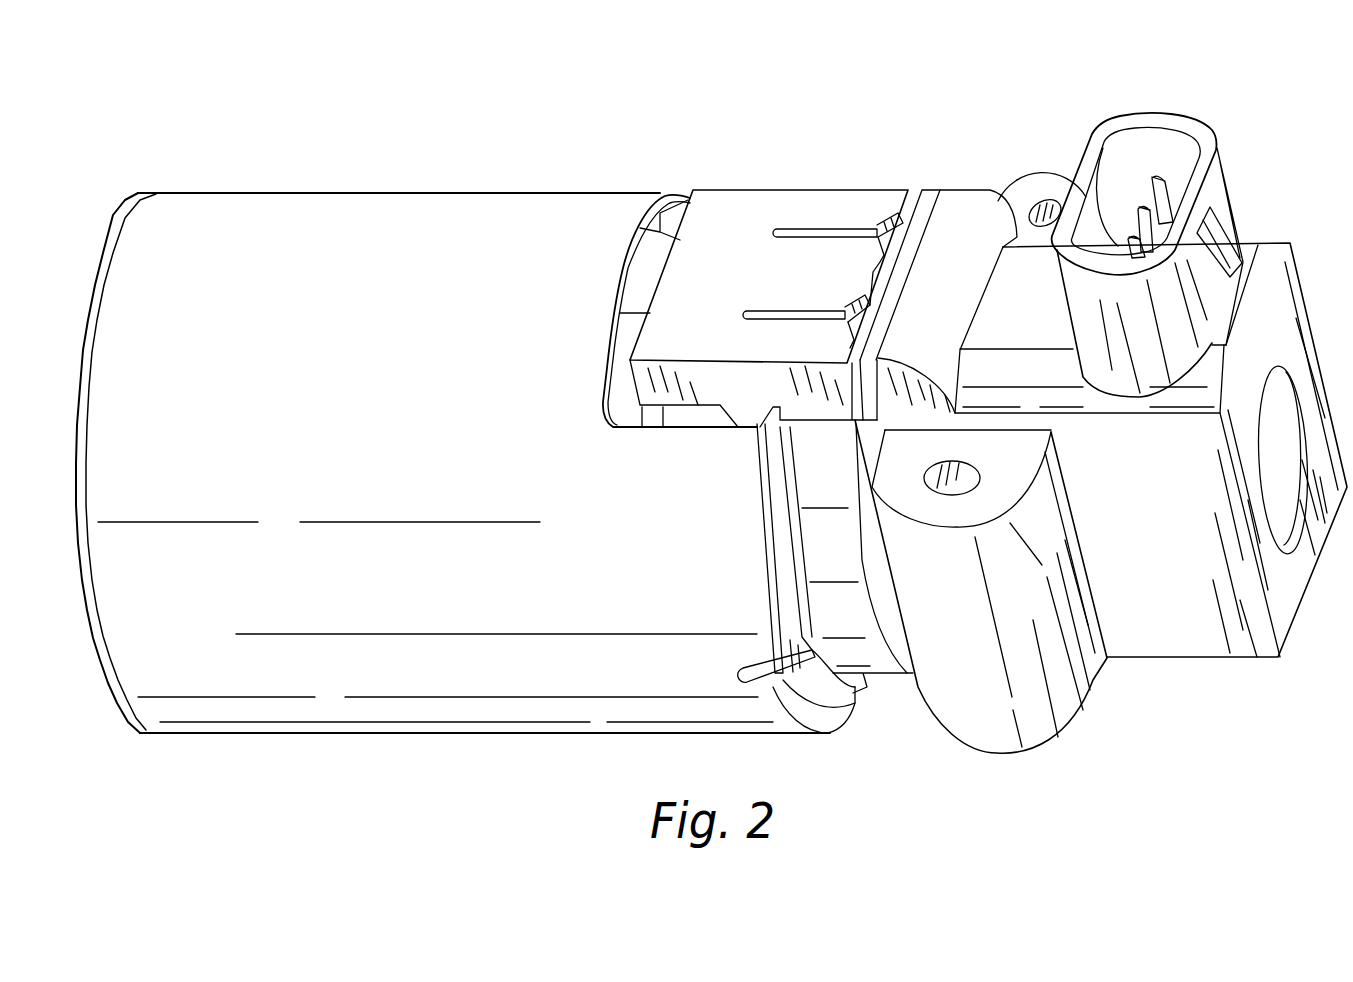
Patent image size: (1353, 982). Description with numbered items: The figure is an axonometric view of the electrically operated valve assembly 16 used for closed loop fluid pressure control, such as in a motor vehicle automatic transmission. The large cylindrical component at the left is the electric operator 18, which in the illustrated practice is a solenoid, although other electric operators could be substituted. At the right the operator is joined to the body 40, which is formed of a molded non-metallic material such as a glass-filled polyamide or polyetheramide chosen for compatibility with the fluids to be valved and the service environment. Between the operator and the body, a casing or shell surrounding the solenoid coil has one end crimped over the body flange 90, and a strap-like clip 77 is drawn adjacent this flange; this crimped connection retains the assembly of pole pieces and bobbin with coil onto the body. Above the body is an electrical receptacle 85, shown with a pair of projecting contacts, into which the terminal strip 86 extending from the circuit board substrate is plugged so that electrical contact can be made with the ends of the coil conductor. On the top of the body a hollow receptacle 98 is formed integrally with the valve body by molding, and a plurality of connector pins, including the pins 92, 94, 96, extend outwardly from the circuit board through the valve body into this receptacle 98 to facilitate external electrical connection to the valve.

The valve assembly 16 is at (1004, 786).
The electric operator 18 is at (427, 160).
The body 40 is at (1195, 660).
The retaining strap 77 is at (860, 697).
The electrical receptacle 85 is at (783, 188).
The terminal strip 86 is at (922, 190).
The body flange 90 is at (775, 687).
The connector pin 92 is at (1100, 185).
The connector pin 94 is at (1141, 205).
The connector pin 96 is at (1156, 176).
The receptacle 98 is at (1230, 188).